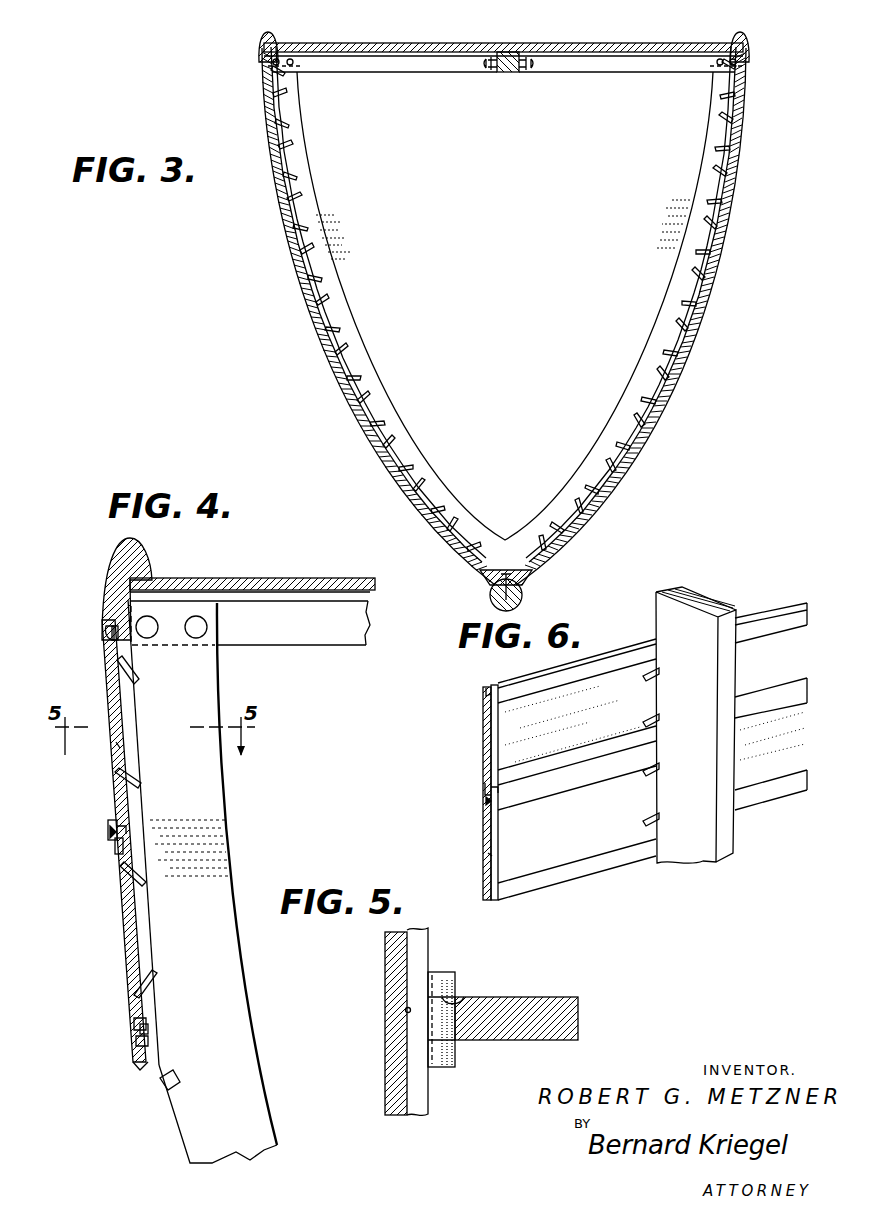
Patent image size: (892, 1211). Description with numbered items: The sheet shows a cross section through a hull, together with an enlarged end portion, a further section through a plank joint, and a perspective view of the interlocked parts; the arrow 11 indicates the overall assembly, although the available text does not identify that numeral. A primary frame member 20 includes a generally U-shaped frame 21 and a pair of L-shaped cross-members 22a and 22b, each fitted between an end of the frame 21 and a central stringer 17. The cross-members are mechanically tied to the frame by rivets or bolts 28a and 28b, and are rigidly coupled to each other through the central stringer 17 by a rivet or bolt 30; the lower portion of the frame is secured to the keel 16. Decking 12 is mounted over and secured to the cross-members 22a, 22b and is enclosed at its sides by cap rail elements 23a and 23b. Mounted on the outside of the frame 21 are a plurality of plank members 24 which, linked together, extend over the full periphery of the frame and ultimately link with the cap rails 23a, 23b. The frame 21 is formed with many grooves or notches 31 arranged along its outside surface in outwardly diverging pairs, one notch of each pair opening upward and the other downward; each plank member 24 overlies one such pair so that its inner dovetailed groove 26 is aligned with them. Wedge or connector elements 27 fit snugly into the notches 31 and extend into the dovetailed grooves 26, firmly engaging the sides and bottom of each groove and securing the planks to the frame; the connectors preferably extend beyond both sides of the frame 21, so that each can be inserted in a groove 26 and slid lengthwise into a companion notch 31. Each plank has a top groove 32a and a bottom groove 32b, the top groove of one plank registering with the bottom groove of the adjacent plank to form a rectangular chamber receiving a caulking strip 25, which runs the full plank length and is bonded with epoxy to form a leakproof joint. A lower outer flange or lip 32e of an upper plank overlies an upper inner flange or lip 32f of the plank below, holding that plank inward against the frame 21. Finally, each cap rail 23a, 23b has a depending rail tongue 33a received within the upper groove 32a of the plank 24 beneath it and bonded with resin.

In FIG. 3, the shield assembly 11 is at (268, 282).
In FIG. 3, the decking 12 is at (589, 43).
In FIG. 4, the decking 12 is at (292, 578).
In FIG. 3, the keel 16 is at (490, 594).
In FIG. 3, the central stringer 17 is at (509, 52).
In FIG. 3, the primary frame member 20 is at (692, 134).
In FIG. 4, the primary frame member 20 is at (246, 776).
In FIG. 6, the primary frame member 20 is at (741, 606).
In FIG. 3, the frame 21 is at (668, 300).
In FIG. 4, the frame 21 is at (221, 800).
In FIG. 5, the frame 21 is at (553, 997).
In FIG. 6, the frame 21 is at (692, 862).
In FIG. 3, the cross-member 22a is at (366, 72).
In FIG. 4, the cross-member 22a is at (308, 645).
In FIG. 3, the cross-member 22b is at (588, 72).
In FIG. 3, the cap rail element 23a is at (259, 46).
In FIG. 4, the cap rail element 23a is at (115, 554).
In FIG. 3, the cap rail element 23b is at (750, 47).
In FIG. 3, the plank member 24 is at (283, 202).
In FIG. 4, the plank member 24 is at (101, 681).
In FIG. 5, the plank member 24 is at (406, 1021).
In FIG. 6, the plank member 24 is at (483, 737).
In FIG. 4, the caulking strip 25 is at (110, 828).
In FIG. 6, the caulking strip 25 is at (484, 800).
In FIG. 3, the dovetailed groove 26 is at (342, 362).
In FIG. 4, the dovetailed groove 26 is at (118, 746).
In FIG. 5, the dovetailed groove 26 is at (405, 1011).
In FIG. 6, the dovetailed groove 26 is at (489, 854).
In FIG. 3, the wedge or connector element 27 is at (288, 166).
In FIG. 4, the wedge or connector element 27 is at (137, 678).
In FIG. 5, the wedge or connector element 27 is at (442, 986).
In FIG. 6, the wedge or connector element 27 is at (656, 718).
In FIG. 3, the rivets or bolts 28a is at (291, 59).
In FIG. 4, the rivets or bolts 28a is at (197, 616).
In FIG. 3, the rivets or bolts 28b is at (733, 59).
In FIG. 3, the rivet or bolt 30 is at (526, 72).
In FIG. 4, the groove or notch 31 is at (176, 1086).
In FIG. 5, the groove or notch 31 is at (456, 1003).
In FIG. 4, the top groove 32a is at (112, 640).
In FIG. 6, the top groove 32a is at (484, 693).
In FIG. 4, the bottom groove 32b is at (140, 1028).
In FIG. 4, the lower outer flange or lip 32e is at (108, 822).
In FIG. 6, the lower outer flange or lip 32e is at (484, 790).
In FIG. 4, the upper inner flange or lip 32f is at (124, 836).
In FIG. 6, the upper inner flange or lip 32f is at (497, 788).
In FIG. 4, the depending rail tongue 33a is at (109, 630).